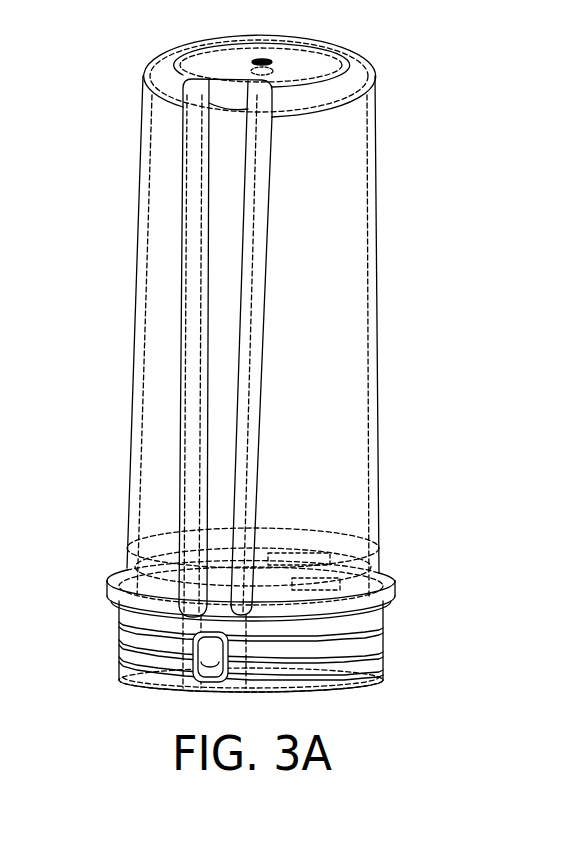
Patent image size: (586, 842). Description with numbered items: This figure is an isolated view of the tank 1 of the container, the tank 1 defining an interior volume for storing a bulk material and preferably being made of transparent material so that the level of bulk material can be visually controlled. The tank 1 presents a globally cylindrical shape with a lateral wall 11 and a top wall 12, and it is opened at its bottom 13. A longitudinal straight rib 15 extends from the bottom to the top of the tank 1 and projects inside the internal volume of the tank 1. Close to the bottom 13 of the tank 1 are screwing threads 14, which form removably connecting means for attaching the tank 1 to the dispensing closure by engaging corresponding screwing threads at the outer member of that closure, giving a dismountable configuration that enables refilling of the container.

The tank 1 is at (245, 367).
The lateral wall 11 is at (378, 306).
The top wall 12 is at (330, 51).
The bottom 13 is at (353, 681).
The screwing threads 14 is at (386, 632).
The longitudinal straight rib 15 is at (218, 273).